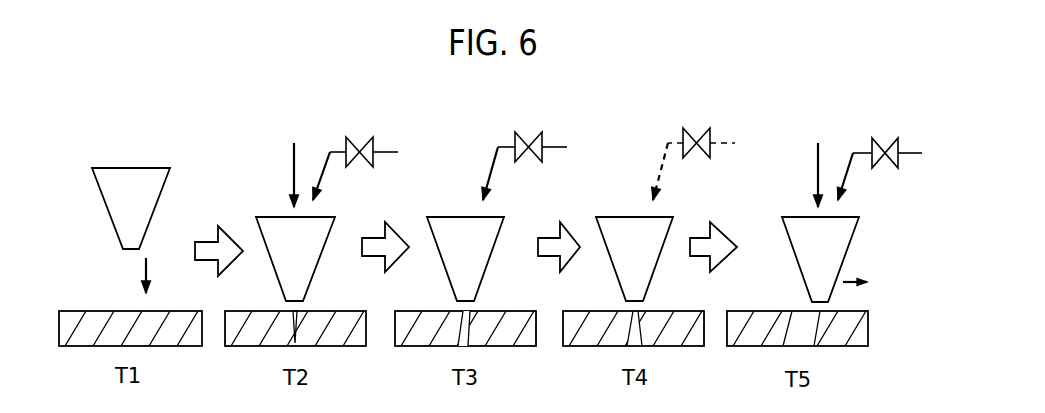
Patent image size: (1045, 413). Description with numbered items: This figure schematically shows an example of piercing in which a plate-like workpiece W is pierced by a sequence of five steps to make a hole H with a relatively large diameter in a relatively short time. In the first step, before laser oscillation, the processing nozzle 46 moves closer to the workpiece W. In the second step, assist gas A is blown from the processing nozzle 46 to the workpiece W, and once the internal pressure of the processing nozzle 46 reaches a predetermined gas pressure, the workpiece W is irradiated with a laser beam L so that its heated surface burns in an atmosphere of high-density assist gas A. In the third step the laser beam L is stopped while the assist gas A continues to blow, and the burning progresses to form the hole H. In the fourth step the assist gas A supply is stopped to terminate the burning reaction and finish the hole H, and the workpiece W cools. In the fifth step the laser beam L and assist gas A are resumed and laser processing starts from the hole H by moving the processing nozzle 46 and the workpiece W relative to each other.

The processing nozzle 46 is at (103, 167).
The workpiece W is at (83, 339).
The hole H is at (468, 331).
The laser beam L is at (554, 161).
The assist gas A is at (617, 155).